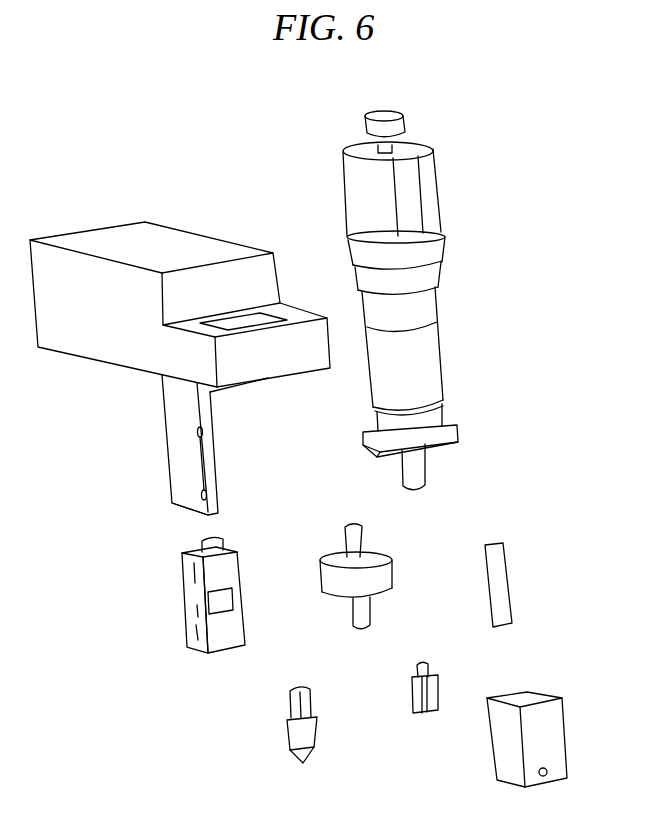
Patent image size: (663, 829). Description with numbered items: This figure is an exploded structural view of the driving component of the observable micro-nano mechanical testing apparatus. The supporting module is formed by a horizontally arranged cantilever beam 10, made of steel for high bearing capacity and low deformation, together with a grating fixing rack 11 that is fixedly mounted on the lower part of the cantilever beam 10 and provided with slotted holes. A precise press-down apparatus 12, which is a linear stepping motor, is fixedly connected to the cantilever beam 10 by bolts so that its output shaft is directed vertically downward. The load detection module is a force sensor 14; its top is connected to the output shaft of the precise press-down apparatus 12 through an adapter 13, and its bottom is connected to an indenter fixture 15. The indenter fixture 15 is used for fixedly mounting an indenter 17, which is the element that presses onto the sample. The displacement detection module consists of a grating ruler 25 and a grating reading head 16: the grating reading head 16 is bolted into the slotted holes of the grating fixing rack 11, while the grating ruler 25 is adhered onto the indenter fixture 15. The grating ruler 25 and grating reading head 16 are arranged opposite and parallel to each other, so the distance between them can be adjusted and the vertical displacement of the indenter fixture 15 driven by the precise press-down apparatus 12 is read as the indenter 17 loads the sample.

The cantilever beam 10 is at (95, 227).
The grating fixing rack 11 is at (168, 460).
The precise press-down apparatus 12 is at (435, 367).
The adapter 13 is at (438, 700).
The force sensor 14 is at (393, 585).
The indenter fixture 15 is at (567, 757).
The grating reading head 16 is at (238, 625).
The indenter 17 is at (315, 737).
The grating ruler 25 is at (510, 603).